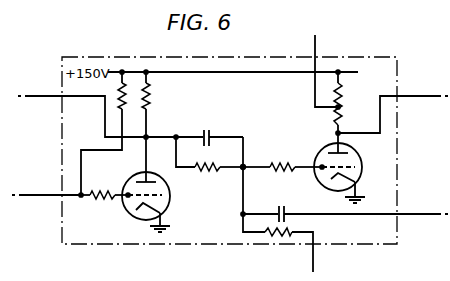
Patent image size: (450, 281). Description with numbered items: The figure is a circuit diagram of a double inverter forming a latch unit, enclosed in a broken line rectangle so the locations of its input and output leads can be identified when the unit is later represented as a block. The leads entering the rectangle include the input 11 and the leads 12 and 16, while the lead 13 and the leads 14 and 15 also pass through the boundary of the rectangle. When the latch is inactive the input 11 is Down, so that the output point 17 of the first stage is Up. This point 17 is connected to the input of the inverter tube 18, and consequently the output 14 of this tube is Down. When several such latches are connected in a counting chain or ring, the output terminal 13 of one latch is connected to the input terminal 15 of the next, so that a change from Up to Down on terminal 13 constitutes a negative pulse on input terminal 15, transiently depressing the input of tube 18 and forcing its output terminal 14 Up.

The input 11 is at (54, 194).
The second input terminal 12 is at (60, 94).
The output terminal 13 is at (318, 48).
The output 14 is at (404, 96).
The input terminal 15 is at (406, 214).
The fourth input terminal 16 is at (316, 261).
The output point 17 is at (241, 170).
The inverter tube 18 is at (361, 173).